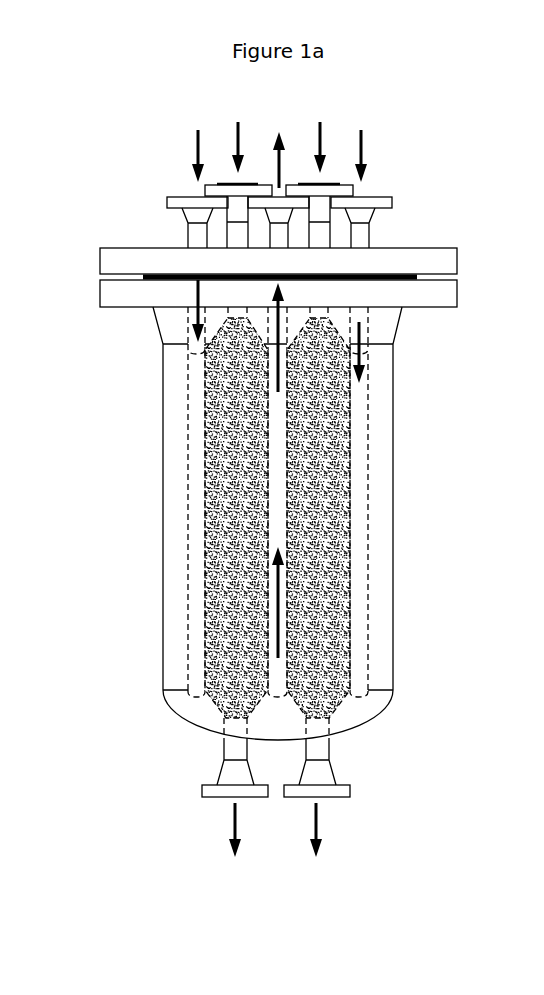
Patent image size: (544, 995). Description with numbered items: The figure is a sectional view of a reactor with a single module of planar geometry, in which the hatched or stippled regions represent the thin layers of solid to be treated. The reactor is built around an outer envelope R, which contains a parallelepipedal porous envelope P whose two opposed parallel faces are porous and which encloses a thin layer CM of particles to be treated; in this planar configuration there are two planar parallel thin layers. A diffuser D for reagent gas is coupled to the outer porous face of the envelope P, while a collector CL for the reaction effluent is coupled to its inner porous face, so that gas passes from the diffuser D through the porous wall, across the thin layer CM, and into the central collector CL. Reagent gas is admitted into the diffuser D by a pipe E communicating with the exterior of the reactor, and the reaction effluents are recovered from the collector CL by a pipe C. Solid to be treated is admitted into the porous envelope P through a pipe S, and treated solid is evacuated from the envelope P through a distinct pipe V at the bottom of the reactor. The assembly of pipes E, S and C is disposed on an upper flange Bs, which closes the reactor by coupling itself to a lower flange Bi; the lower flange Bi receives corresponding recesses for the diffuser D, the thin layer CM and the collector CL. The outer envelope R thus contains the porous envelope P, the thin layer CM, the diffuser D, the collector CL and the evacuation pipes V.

The pipe for admitting reagent gas E is at (279, 241).
The pipe for admitting solid S is at (279, 204).
The pipe for recovering reaction effluents C is at (278, 245).
The upper flange Bs is at (133, 263).
The lower flange Bi is at (133, 295).
The diffuser D is at (197, 403).
The outer envelope R is at (162, 460).
The thin layer CM is at (238, 548).
The collector CL is at (277, 527).
The porous envelope P is at (204, 653).
The pipe for evacuating treated solid V is at (276, 802).